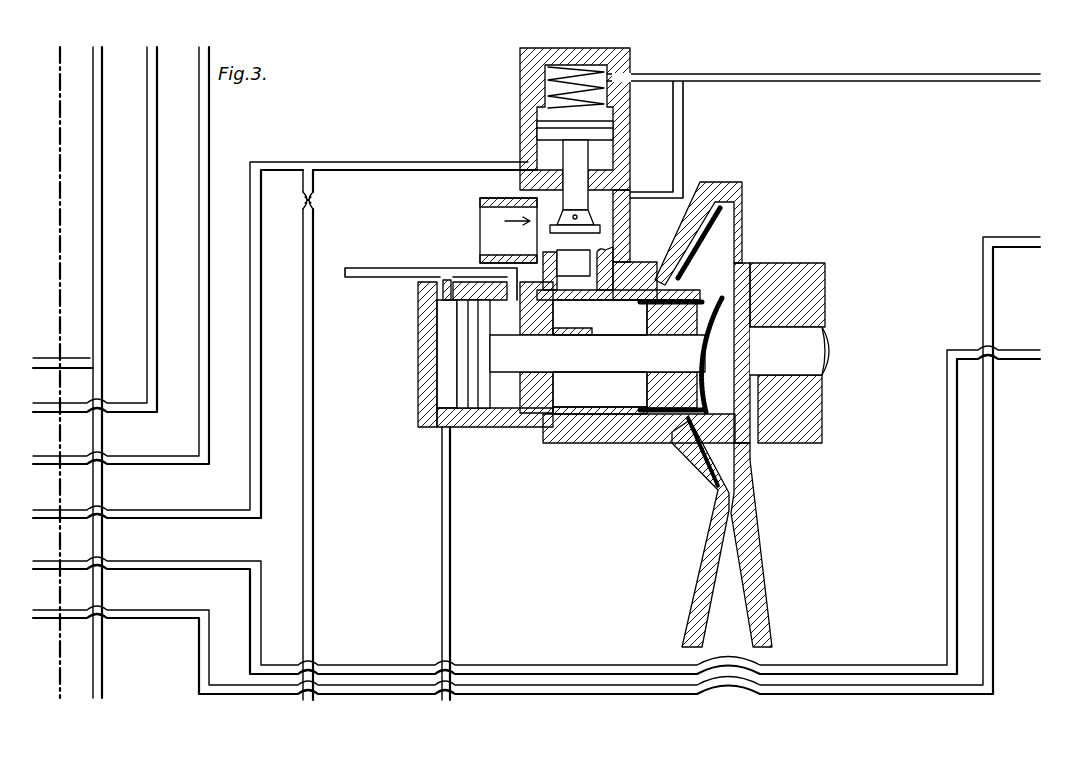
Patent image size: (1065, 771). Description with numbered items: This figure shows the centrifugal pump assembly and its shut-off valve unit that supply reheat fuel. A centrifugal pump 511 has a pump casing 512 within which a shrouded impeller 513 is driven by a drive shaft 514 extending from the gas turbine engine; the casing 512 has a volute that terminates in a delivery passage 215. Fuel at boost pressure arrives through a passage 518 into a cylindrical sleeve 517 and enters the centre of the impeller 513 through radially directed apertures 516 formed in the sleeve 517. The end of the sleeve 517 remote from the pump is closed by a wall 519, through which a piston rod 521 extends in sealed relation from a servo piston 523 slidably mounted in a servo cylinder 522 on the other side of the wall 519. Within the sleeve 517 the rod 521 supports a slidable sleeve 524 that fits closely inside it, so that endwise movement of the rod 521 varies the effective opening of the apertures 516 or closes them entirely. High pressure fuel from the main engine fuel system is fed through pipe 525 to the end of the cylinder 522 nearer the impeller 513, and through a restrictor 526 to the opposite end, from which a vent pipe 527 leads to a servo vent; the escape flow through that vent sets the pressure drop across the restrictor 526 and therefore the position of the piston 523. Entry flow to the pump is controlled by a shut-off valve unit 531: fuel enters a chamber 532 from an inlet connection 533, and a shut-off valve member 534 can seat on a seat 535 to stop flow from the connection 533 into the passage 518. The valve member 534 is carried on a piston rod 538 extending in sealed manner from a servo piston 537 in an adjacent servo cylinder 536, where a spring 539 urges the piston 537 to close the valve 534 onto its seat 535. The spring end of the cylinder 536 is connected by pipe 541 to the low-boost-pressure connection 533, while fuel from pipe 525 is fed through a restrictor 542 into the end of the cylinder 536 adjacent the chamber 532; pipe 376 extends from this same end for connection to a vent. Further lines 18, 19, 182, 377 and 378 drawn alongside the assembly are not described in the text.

The pipe 18 is at (204, 441).
The pipe 19 is at (149, 381).
The pipe 182 is at (98, 335).
The delivery passage 215 is at (748, 656).
The pipe 376 is at (203, 514).
The pipe 377 is at (141, 568).
The pipe 378 is at (136, 617).
The centrifugal pump 511 is at (725, 388).
The pump casing 512 is at (741, 243).
The shrouded impeller 513 is at (722, 224).
The drive shaft 514 is at (820, 352).
The radially directed apertures 516 is at (703, 420).
The cylindrical sleeve 517 is at (650, 418).
The passage 518 is at (588, 273).
The wall 519 is at (529, 400).
The piston rod 521 is at (629, 361).
The servo cylinder 522 is at (510, 395).
The servo piston 523 is at (474, 310).
The slidable sleeve 524 is at (652, 302).
The pipe 525 is at (375, 272).
The restrictor 526 is at (441, 291).
The vent pipe 527 is at (451, 640).
The shut-off valve unit 531 is at (512, 122).
The chamber 532 is at (545, 198).
The inlet connection 533 is at (487, 213).
The shut-off valve member 534 is at (595, 229).
The seat 535 is at (550, 256).
The servo cylinder 536 is at (540, 108).
The servo piston 537 is at (545, 133).
The piston rod 538 is at (582, 160).
The spring 539 is at (556, 86).
The pipe 541 is at (657, 76).
The restrictor 542 is at (318, 200).